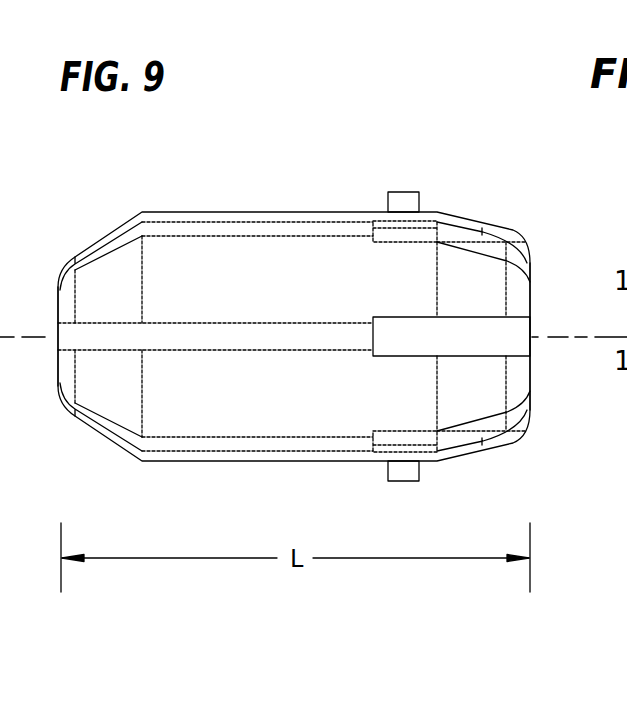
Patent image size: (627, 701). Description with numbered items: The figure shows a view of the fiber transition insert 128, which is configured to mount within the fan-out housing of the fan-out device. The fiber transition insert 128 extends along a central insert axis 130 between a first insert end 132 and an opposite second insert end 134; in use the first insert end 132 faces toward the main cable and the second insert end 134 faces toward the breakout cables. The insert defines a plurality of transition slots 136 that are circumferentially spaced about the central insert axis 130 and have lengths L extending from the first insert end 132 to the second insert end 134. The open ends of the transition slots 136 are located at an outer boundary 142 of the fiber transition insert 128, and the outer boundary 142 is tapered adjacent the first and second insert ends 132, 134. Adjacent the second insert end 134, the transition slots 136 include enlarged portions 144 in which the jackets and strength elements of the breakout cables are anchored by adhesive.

The fiber transition insert 128 is at (281, 190).
The central insert axis 130 is at (557, 340).
The first insert end 132 is at (43, 390).
The second insert end 134 is at (538, 280).
The transition slots 136 is at (192, 227).
The outer boundary 142 is at (122, 223).
The enlarged portions 144 is at (482, 233).